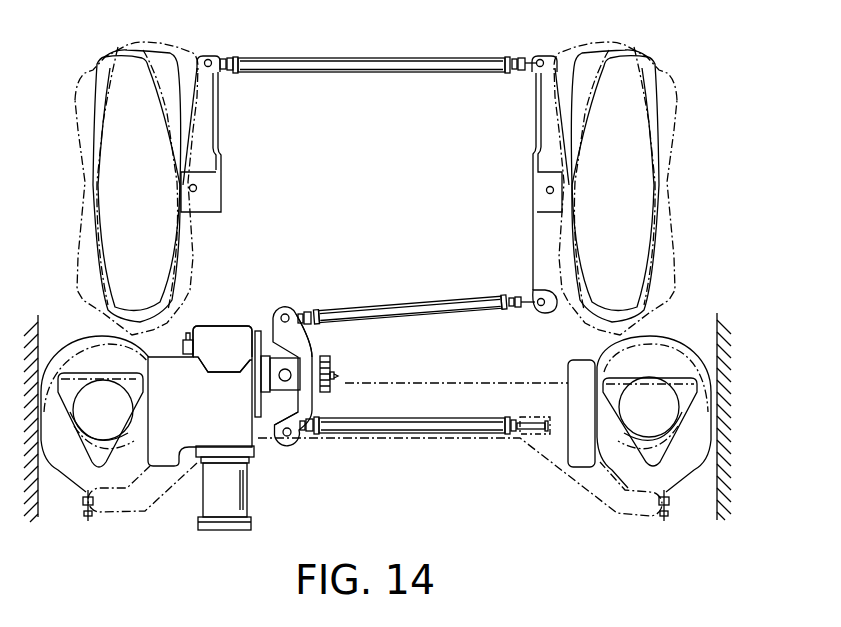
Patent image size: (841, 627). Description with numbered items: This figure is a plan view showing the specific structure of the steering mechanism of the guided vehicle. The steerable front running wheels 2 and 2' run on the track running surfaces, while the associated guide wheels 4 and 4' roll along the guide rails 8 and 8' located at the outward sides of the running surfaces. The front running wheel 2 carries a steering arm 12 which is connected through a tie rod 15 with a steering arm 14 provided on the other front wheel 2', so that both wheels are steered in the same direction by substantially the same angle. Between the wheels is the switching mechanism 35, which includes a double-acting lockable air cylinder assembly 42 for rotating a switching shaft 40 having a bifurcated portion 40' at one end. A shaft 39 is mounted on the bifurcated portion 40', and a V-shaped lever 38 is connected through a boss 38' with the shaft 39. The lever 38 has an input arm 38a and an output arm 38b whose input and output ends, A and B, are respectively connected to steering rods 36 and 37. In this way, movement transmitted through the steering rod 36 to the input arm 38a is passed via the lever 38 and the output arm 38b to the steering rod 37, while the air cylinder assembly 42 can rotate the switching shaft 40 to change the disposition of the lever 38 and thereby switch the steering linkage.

The front running wheel 2 is at (622, 188).
The front running wheel 2' is at (122, 188).
The guide wheel 4 is at (484, 428).
The guide wheel 4' is at (119, 428).
The guide rail 8 is at (707, 410).
The guide rail 8' is at (47, 414).
The steering arm 12 is at (536, 252).
The steering arm 14 is at (210, 173).
The tie rod 15 is at (412, 57).
The switching mechanism 35 is at (187, 436).
The steering rod 36 is at (443, 433).
The steering rod 37 is at (459, 313).
The V-shaped lever 38 is at (316, 386).
The boss 38' is at (337, 364).
The input arm 38a is at (303, 405).
The output arm 38b is at (302, 322).
The shaft 39 is at (282, 378).
The switching shaft 40 is at (222, 341).
The bifurcated portion 40' is at (230, 398).
The double-acting lockable air cylinder assembly 42 is at (240, 510).